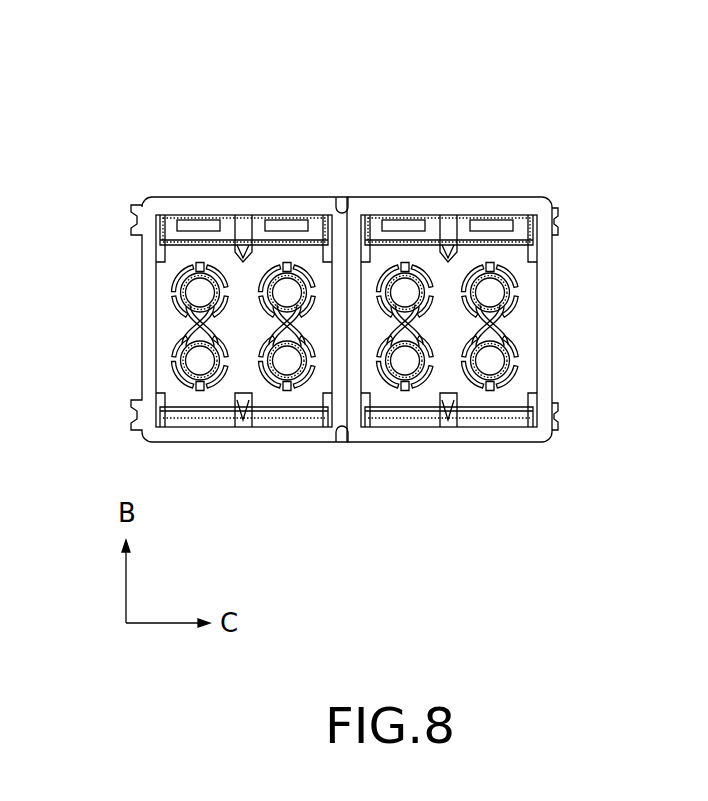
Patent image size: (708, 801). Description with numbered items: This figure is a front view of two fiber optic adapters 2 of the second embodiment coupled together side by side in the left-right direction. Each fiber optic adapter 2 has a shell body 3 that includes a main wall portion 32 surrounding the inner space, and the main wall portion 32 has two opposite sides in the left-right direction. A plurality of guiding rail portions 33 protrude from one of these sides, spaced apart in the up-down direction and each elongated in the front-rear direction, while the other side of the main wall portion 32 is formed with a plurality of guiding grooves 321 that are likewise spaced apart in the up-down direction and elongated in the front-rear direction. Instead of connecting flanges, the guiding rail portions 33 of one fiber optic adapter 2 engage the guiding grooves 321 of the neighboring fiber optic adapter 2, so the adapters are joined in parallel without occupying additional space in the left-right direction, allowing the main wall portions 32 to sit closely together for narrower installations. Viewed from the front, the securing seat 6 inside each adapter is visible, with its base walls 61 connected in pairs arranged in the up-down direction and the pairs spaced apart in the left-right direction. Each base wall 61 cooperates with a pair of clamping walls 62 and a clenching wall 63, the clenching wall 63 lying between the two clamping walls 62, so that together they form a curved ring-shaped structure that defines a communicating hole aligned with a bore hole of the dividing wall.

The fiber optic adapter 2 is at (341, 271).
The shell body 3 is at (346, 292).
The securing seat 6 is at (271, 276).
The main wall portion 32 is at (227, 197).
The guiding rail portions 33 is at (133, 216).
The base walls 61 is at (300, 276).
The clamping walls 62 is at (192, 263).
The clenching walls 63 is at (215, 262).
The guiding grooves 321 is at (348, 207).